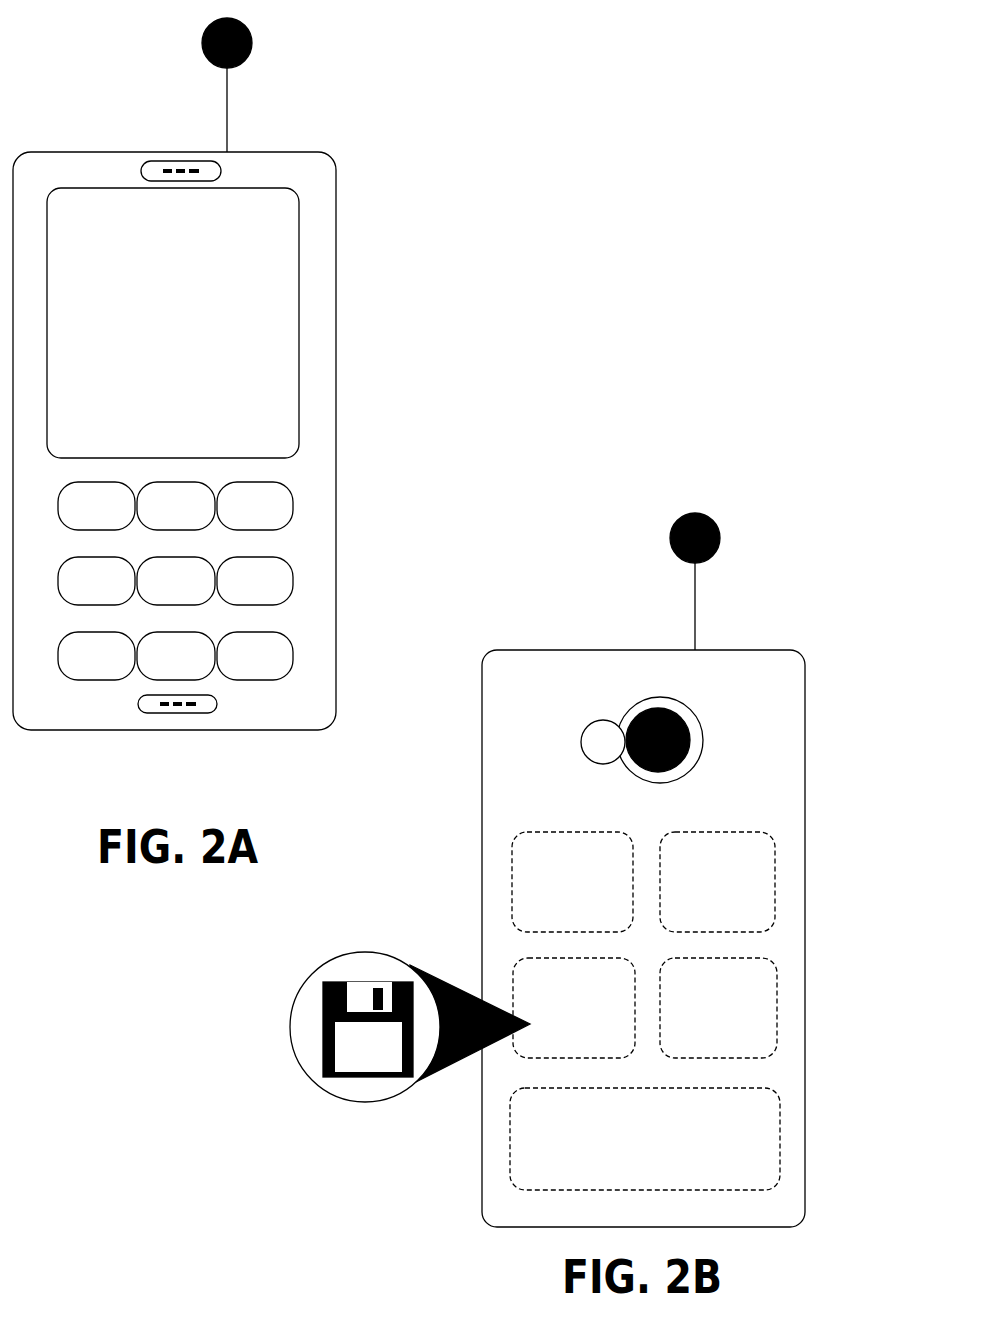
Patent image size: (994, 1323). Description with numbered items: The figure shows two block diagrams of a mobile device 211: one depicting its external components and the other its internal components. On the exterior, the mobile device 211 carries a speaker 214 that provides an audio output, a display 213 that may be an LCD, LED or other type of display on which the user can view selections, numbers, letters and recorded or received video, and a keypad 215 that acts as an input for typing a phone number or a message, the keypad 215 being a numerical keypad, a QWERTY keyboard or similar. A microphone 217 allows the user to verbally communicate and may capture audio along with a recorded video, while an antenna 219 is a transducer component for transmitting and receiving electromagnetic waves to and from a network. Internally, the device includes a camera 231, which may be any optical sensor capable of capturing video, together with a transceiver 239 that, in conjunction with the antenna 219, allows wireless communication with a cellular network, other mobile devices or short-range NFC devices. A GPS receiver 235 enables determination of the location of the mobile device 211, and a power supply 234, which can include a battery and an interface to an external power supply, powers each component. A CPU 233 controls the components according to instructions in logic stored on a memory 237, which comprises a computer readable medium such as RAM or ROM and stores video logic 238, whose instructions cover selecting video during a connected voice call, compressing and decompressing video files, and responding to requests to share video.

In FIG. 2A, the mobile device 211 is at (280, 152).
In FIG. 2A, the display 213 is at (299, 322).
In FIG. 2A, the speaker 214 is at (178, 172).
In FIG. 2A, the keypad 215 is at (293, 505).
In FIG. 2A, the microphone 217 is at (173, 712).
In FIG. 2A, the antenna 219 is at (227, 105).
In FIG. 2B, the camera 231 is at (642, 697).
In FIG. 2B, the central processing unit (CPU) 233 is at (758, 830).
In FIG. 2B, the power supply 234 is at (782, 1135).
In FIG. 2B, the Global Positioning System (GPS) receiver 235 is at (512, 882).
In FIG. 2B, the memory 237 is at (515, 963).
In FIG. 2B, the video logic 238 is at (322, 1063).
In FIG. 2B, the transceiver 239 is at (778, 1005).